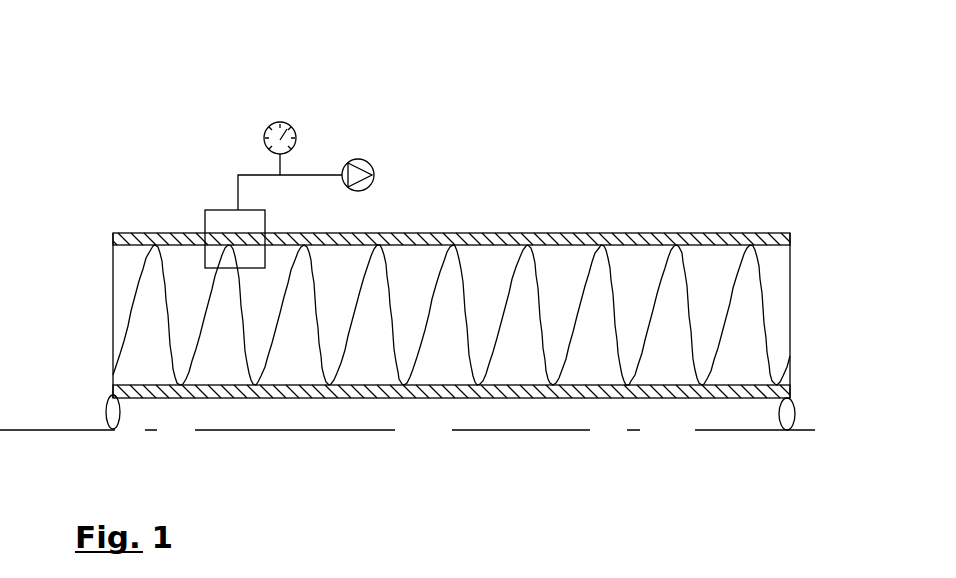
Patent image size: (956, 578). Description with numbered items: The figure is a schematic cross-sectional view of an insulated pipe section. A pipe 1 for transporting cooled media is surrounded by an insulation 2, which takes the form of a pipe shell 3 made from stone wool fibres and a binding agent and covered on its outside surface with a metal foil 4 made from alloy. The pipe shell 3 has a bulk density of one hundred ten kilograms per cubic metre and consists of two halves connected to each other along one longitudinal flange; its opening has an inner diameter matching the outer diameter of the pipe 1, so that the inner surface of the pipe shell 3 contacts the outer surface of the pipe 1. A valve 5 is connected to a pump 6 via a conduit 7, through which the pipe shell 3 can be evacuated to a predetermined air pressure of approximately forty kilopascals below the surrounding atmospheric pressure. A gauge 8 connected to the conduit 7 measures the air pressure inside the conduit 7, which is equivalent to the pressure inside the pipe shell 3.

The pipe 1 is at (793, 388).
The insulation 2 is at (803, 237).
The pipe shell 3 is at (120, 290).
The metal foil 4 is at (597, 235).
The valve 5 is at (203, 210).
The pump 6 is at (370, 160).
The conduit 7 is at (305, 175).
The gauge 8 is at (287, 125).